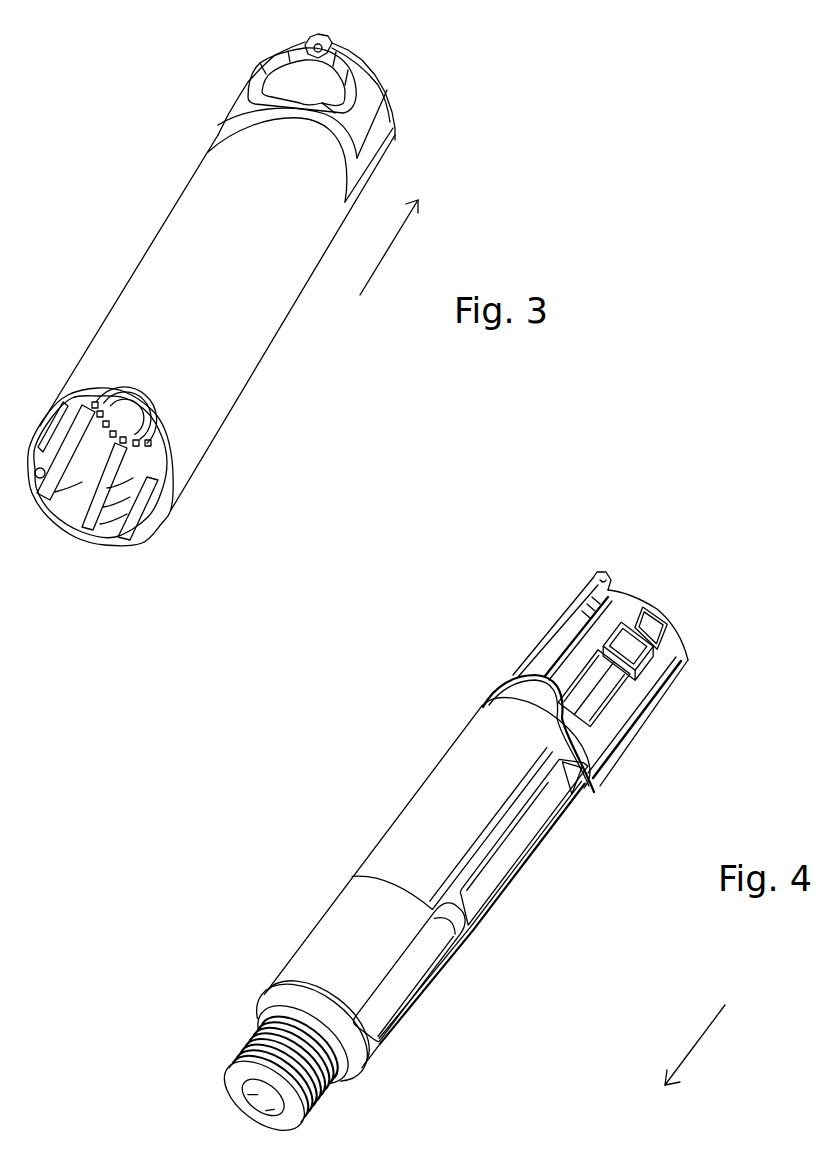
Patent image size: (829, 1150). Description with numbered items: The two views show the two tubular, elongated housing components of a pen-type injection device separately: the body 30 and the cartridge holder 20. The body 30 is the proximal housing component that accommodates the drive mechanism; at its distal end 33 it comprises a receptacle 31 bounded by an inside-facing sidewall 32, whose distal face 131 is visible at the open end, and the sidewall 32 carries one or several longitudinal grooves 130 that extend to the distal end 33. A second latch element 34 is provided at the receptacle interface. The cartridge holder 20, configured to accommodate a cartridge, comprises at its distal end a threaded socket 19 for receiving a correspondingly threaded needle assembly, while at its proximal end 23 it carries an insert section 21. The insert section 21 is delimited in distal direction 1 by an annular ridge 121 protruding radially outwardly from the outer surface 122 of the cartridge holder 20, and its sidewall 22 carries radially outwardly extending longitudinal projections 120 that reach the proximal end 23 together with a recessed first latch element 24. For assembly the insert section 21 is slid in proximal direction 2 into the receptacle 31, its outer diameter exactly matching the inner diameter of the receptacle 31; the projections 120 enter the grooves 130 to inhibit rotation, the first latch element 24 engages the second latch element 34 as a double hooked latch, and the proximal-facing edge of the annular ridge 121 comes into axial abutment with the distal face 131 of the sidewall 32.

In FIG. 3, the body 30 is at (163, 166).
In FIG. 3, the proximal direction 2 is at (389, 247).
In FIG. 3, the second latch element 34 is at (140, 459).
In FIG. 3, the distal face 131 is at (173, 476).
In FIG. 3, the sidewall 32 is at (68, 488).
In FIG. 3, the longitudinal groove 130 is at (100, 520).
In FIG. 3, the receptacle 31 is at (148, 497).
In FIG. 3, the distal end 33 is at (120, 553).
In FIG. 4, the cartridge holder 20 is at (437, 615).
In FIG. 4, the proximal end 23 is at (685, 550).
In FIG. 4, the insert section 21 is at (617, 607).
In FIG. 4, the annular ridge 121 is at (515, 677).
In FIG. 4, the outer surface 122 is at (426, 786).
In FIG. 4, the first latch element 24 is at (655, 652).
In FIG. 4, the longitudinal projection 120 is at (608, 690).
In FIG. 4, the sidewall 22 is at (620, 737).
In FIG. 4, the threaded socket 19 is at (252, 1035).
In FIG. 4, the distal direction 1 is at (695, 1045).